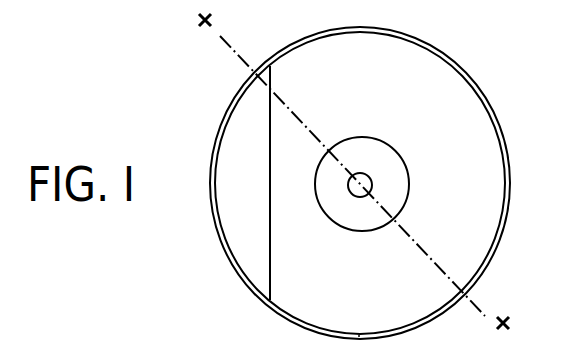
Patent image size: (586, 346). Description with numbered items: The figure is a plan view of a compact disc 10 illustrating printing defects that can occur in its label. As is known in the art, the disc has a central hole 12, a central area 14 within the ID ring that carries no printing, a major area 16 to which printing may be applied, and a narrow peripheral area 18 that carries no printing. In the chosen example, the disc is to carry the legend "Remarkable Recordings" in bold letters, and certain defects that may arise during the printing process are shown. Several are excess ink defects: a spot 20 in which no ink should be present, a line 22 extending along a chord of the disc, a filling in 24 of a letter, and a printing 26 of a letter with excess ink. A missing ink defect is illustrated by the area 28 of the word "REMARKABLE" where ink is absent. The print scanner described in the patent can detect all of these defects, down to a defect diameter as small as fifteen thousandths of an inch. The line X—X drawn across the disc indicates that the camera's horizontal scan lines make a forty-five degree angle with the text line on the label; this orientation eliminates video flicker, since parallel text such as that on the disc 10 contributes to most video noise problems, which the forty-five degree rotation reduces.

The compact disc 10 is at (500, 94).
The central hole 12 is at (374, 160).
The central area 14 is at (400, 206).
The major area 16 is at (476, 284).
The narrow peripheral area 18 is at (510, 190).
The spot 20 is at (460, 182).
The line 22 is at (270, 188).
The filling in of a letter 24 is at (340, 268).
The printing of a letter with excess ink 26 is at (396, 268).
The area of missing ink 28 is at (358, 103).